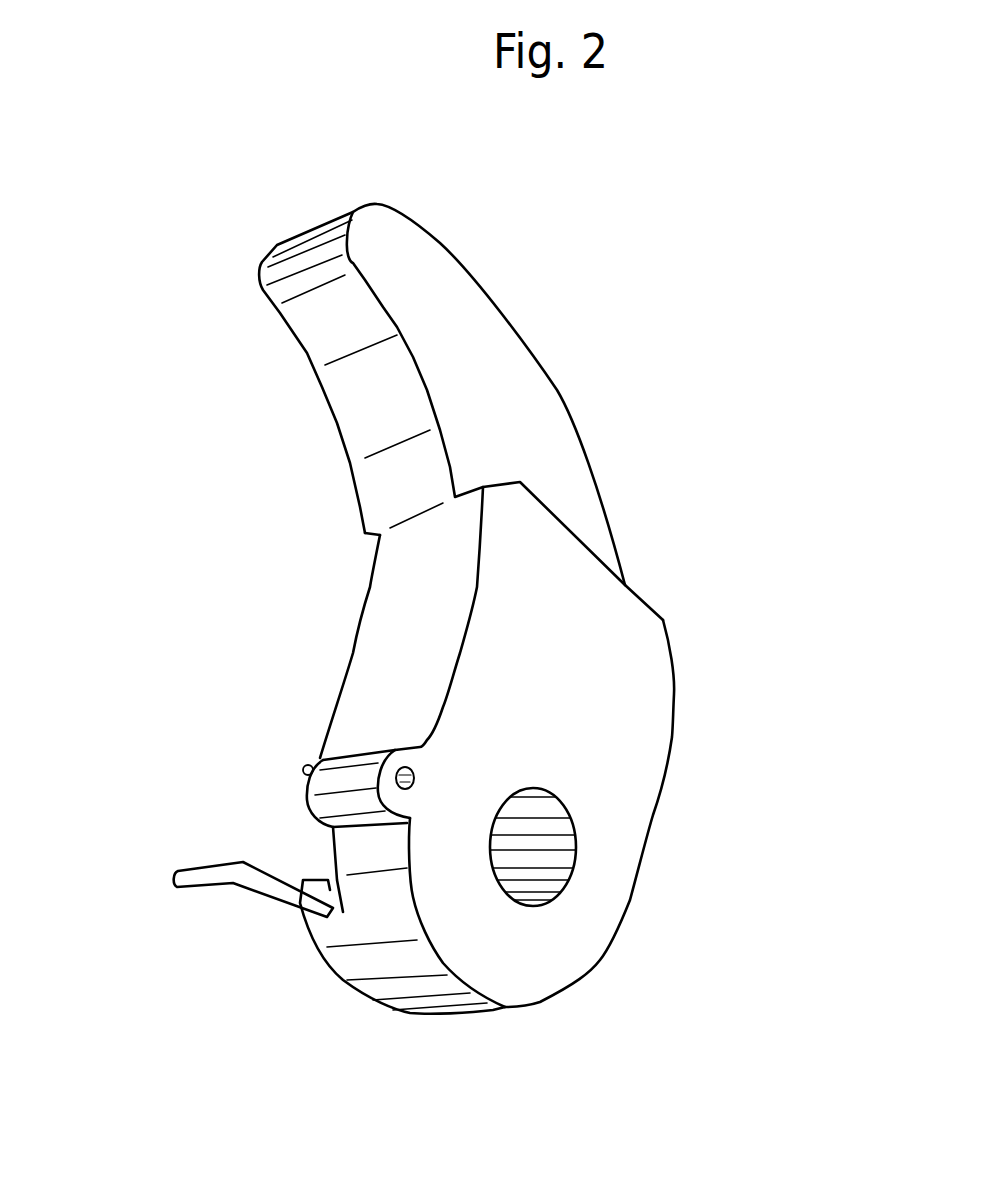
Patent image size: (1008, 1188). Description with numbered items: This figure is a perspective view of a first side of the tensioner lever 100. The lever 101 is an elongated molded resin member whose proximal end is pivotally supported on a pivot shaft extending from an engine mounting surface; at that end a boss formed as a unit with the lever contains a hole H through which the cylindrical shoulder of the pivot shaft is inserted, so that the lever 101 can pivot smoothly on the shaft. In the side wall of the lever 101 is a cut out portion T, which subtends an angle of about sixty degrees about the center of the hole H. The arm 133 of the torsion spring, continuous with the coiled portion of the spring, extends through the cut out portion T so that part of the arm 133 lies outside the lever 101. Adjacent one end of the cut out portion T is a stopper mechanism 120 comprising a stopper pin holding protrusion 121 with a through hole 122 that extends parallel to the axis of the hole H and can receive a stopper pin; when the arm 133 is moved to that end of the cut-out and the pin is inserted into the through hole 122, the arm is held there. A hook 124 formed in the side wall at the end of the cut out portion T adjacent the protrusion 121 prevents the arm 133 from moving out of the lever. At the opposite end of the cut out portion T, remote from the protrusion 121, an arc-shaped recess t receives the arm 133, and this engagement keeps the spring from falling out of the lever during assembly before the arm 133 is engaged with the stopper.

The tensioner lever 100 is at (740, 743).
The lever 101 is at (640, 630).
The stopper mechanism 120 is at (140, 582).
The stopper pin holding protrusion 121 is at (342, 773).
The through hole 122 is at (397, 767).
The hook 124 is at (305, 765).
The arm 133 is at (235, 876).
The hole H is at (558, 833).
The cut out portion T is at (295, 847).
The arc-shaped recess t is at (327, 908).